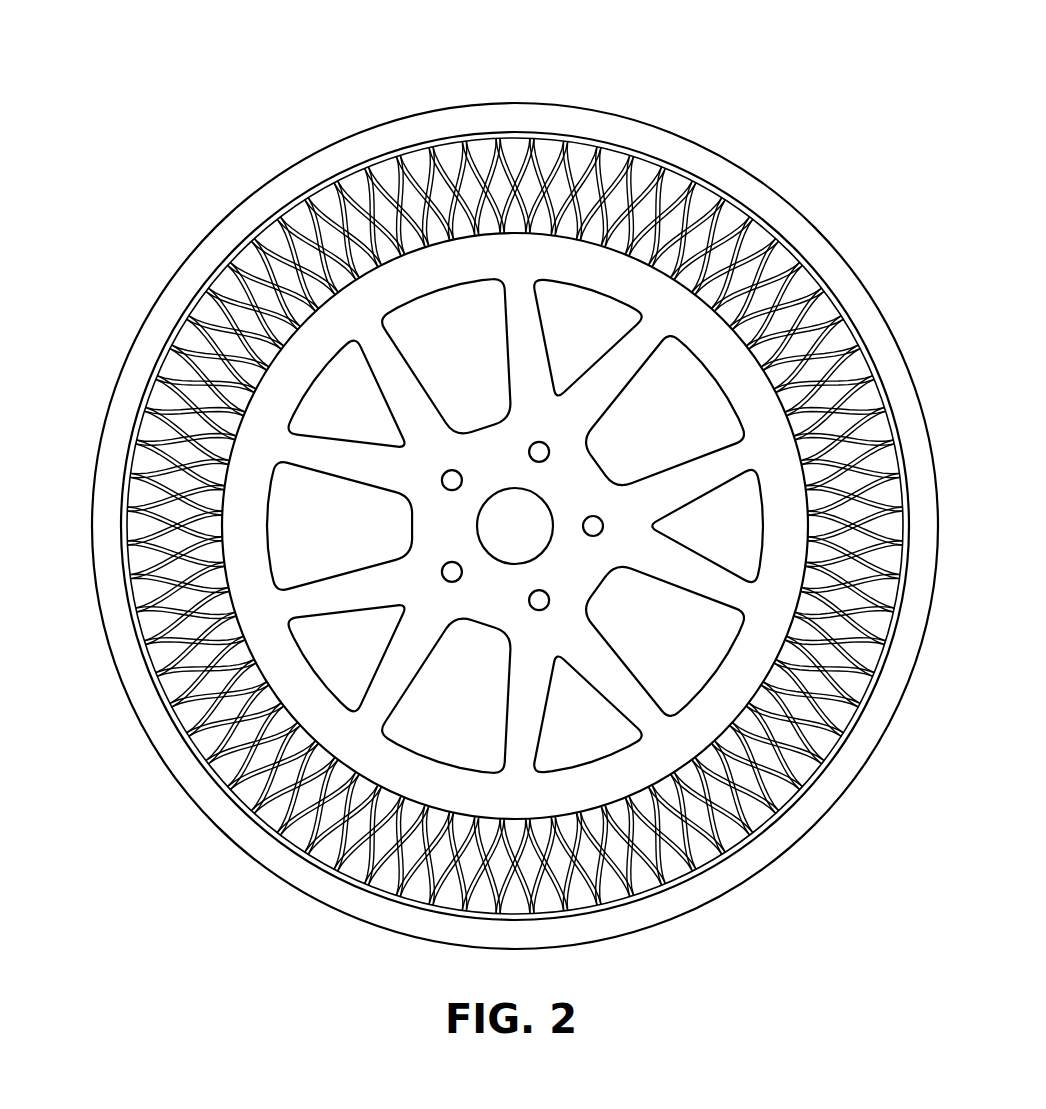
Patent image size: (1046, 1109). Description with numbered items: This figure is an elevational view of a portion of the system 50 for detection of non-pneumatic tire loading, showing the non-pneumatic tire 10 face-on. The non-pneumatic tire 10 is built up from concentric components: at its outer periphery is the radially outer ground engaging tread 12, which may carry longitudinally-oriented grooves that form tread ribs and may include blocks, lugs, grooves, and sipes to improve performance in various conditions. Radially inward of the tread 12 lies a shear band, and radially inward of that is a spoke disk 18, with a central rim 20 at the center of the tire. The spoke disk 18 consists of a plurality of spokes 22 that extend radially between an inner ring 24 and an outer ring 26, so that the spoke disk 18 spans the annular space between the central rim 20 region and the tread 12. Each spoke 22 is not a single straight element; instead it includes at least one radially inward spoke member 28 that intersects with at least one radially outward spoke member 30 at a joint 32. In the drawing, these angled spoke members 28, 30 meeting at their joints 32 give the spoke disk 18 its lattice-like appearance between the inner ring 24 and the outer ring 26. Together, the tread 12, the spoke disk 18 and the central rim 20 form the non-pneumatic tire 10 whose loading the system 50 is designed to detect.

The non-pneumatic tire 10 is at (730, 148).
The tread 12 is at (856, 266).
The spoke disk 18 is at (388, 176).
The central rim 20 is at (230, 531).
The spoke 22 is at (253, 240).
The inner ring 24 is at (243, 363).
The outer ring 26 is at (227, 260).
The radially inward spoke member 28 is at (520, 178).
The radially outward spoke member 30 is at (458, 196).
The joint 32 is at (482, 175).
The system for detection of non-pneumatic tire loading 50 is at (198, 845).